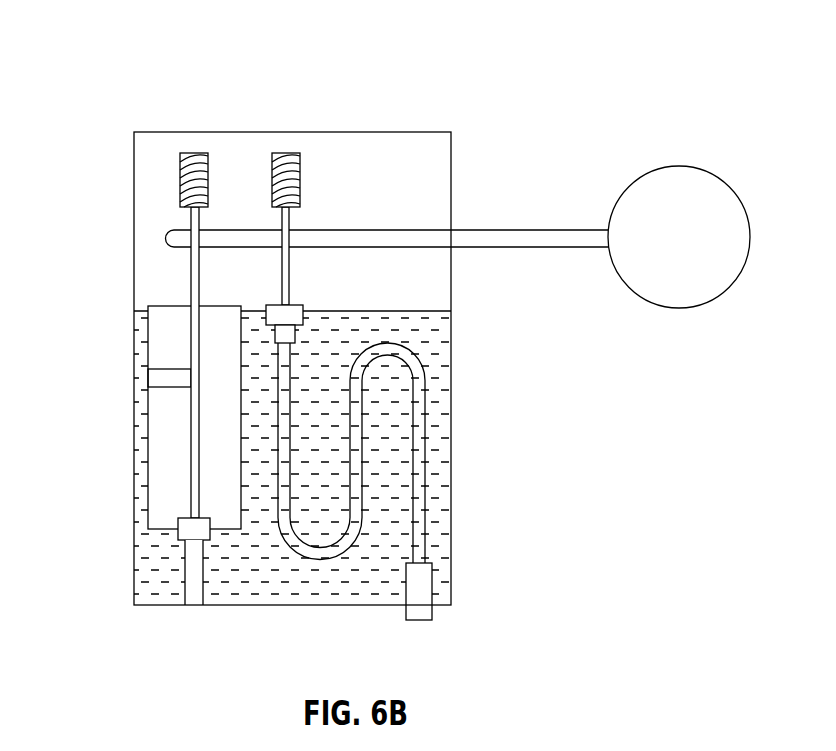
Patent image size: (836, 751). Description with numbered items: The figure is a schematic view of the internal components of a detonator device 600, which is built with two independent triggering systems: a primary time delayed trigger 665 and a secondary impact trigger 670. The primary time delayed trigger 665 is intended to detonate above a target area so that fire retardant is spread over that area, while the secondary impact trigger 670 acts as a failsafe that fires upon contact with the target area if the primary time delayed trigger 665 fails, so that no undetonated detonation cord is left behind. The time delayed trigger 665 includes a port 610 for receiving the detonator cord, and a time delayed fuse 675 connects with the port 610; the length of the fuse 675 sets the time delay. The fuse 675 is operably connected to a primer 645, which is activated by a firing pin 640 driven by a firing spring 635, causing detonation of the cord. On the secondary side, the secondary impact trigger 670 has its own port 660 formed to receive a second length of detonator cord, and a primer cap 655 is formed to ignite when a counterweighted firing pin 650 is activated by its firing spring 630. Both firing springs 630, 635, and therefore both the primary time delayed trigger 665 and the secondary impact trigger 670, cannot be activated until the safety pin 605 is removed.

The detonator device 600 is at (574, 68).
The safety pin 605 is at (512, 230).
The port 610 is at (432, 611).
The firing spring 630 is at (180, 178).
The firing spring 635 is at (292, 153).
The firing pin 640 is at (289, 217).
The primer 645 is at (317, 323).
The counterweighted firing pin 650 is at (172, 376).
The primer cap 655 is at (178, 530).
The port 660 is at (182, 592).
The primary time delayed trigger 665 is at (400, 537).
The secondary impact trigger 670 is at (172, 437).
The time delayed fuse 675 is at (427, 444).